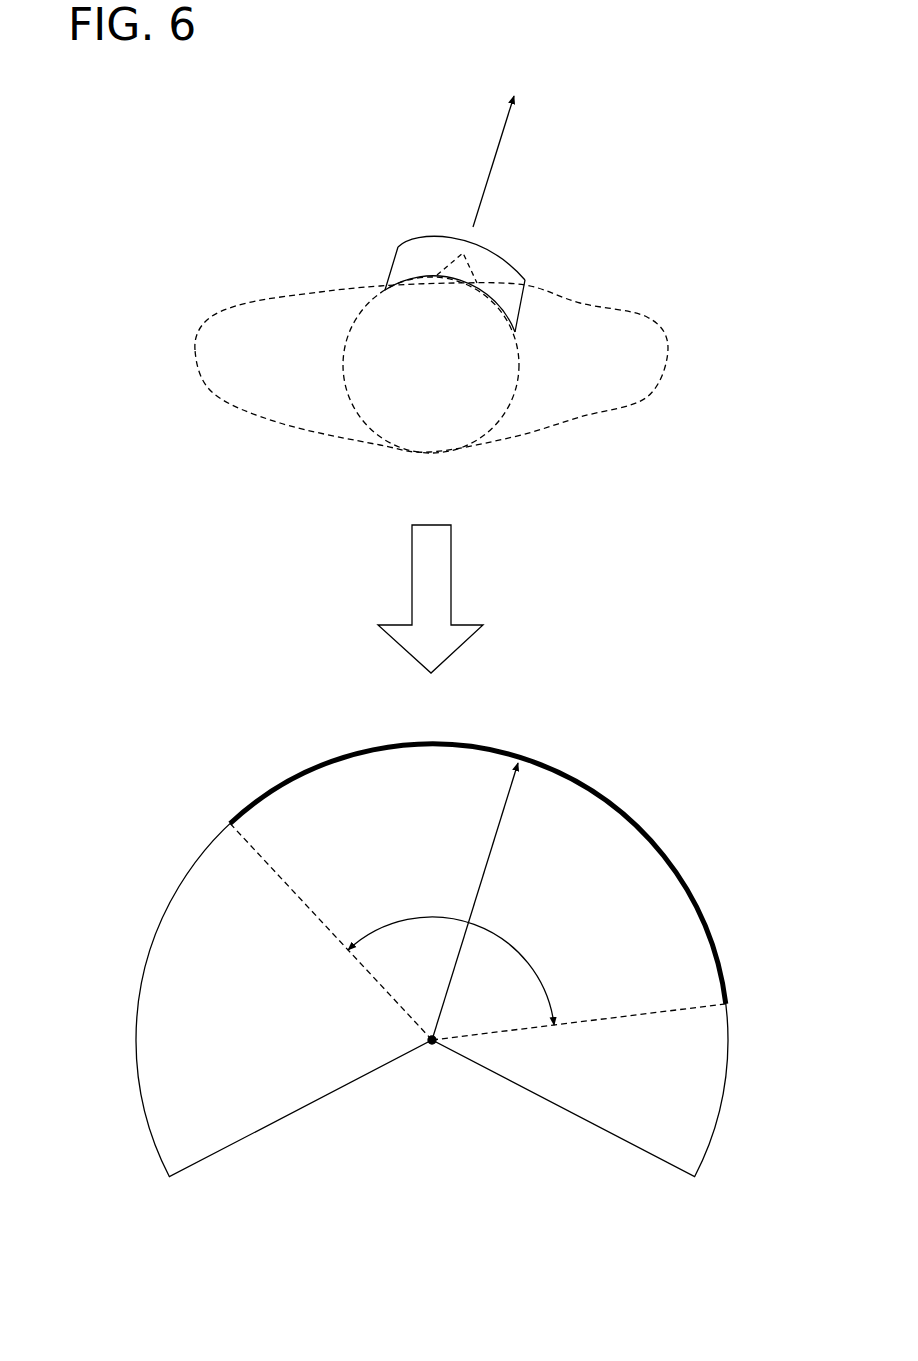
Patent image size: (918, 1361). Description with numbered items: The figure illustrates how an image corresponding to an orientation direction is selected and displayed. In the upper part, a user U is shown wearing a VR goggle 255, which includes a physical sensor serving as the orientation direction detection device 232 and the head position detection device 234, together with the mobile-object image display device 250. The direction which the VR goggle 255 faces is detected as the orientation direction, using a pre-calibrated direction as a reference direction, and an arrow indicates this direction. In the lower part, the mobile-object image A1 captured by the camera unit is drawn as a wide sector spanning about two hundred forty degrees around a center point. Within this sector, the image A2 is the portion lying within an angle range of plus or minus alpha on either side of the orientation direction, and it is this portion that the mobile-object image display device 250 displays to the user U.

The VR goggle 255 is at (581, 266).
The orientation direction detection device 232 is at (455, 284).
The head position detection device 234 is at (455, 284).
The mobile-object image display device 250 is at (518, 270).
The user U is at (670, 348).
The mobile-object image A1 is at (137, 992).
The image A2 is at (323, 762).